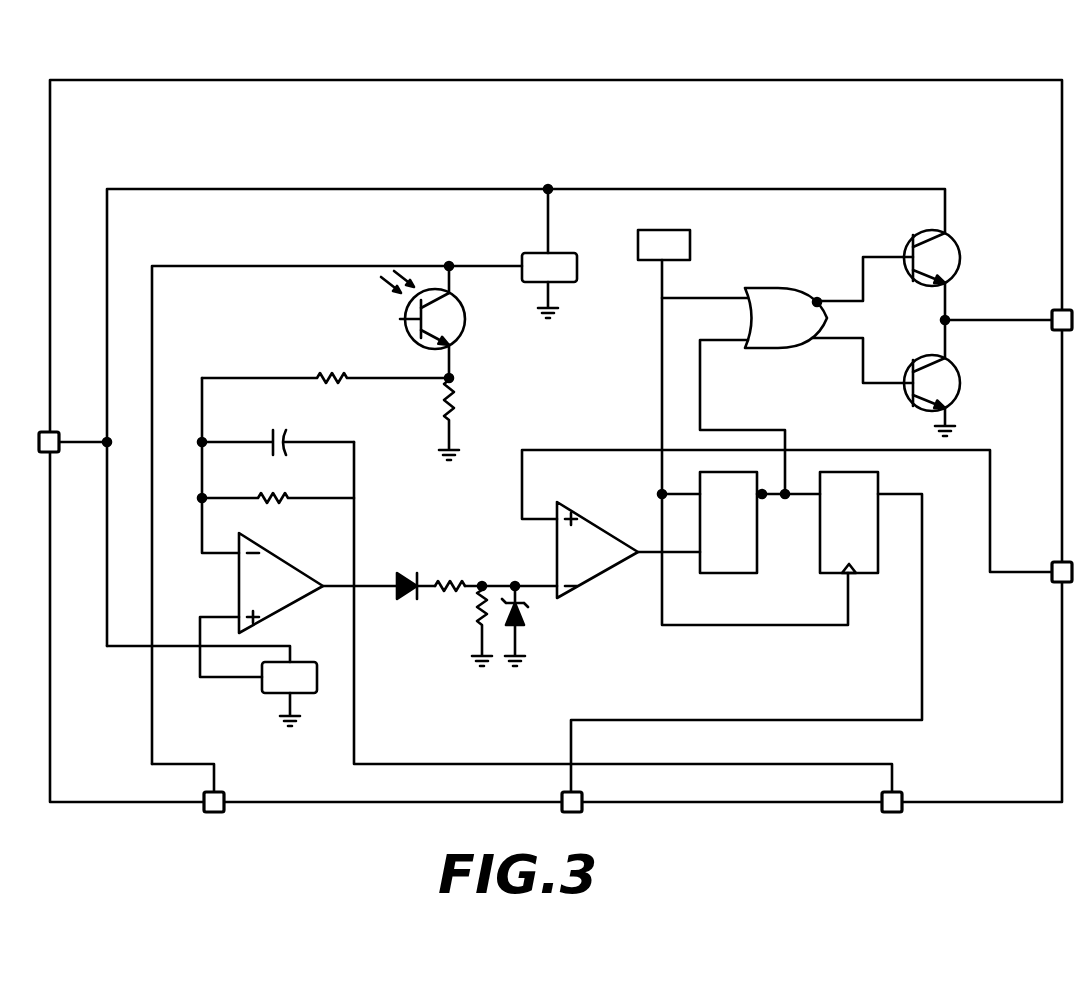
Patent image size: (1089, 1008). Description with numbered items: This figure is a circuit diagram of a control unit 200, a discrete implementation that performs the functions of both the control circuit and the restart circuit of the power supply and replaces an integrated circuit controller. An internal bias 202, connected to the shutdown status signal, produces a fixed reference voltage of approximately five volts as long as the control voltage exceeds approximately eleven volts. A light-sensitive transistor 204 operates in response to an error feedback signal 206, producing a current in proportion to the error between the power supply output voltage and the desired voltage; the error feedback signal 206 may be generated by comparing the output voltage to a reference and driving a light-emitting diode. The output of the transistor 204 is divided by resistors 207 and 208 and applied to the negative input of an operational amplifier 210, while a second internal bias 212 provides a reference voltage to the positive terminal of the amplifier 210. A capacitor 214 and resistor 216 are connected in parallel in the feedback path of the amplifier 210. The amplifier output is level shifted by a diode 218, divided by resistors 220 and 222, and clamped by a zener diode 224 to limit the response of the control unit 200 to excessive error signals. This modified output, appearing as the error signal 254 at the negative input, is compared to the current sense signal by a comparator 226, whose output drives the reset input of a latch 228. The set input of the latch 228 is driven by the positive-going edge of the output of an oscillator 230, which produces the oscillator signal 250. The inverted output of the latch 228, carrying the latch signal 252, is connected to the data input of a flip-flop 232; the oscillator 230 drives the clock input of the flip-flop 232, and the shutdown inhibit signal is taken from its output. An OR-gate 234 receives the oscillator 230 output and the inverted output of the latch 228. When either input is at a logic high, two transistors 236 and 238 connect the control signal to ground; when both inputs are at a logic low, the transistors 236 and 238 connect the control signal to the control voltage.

The control unit 200 is at (955, 80).
The internal bias 202 is at (528, 254).
The light-sensitive transistor 204 is at (462, 338).
The error feedback signal 206 is at (384, 297).
The resistor 207 is at (454, 396).
The resistor 208 is at (343, 380).
The operational amplifier 210 is at (288, 560).
The second internal bias 212 is at (268, 694).
The capacitor 214 is at (278, 427).
The resistor 216 is at (282, 495).
The diode 218 is at (402, 560).
The resistor 220 is at (447, 581).
The resistor 222 is at (478, 610).
The zener diode 224 is at (526, 621).
The comparator 226 is at (596, 527).
The latch 228 is at (751, 574).
The oscillator 230 is at (704, 214).
The flip-flop 232 is at (856, 575).
The OR-gate 234 is at (772, 290).
The transistor 236 is at (955, 248).
The transistor 238 is at (955, 372).
The oscillator signal 250 is at (748, 625).
The latch signal 252 is at (700, 396).
The error signal 254 is at (548, 572).